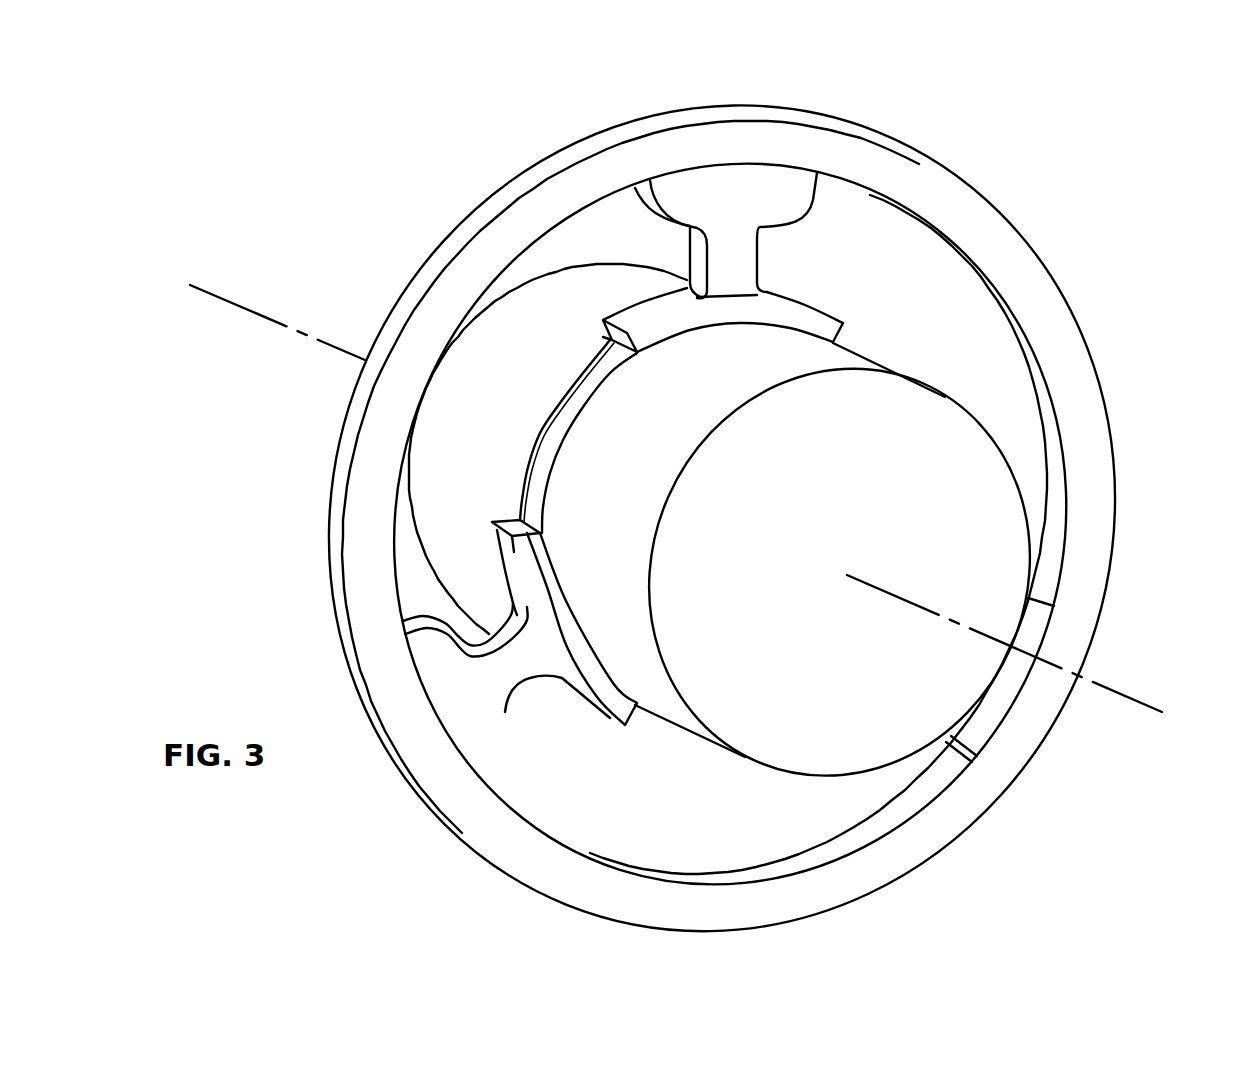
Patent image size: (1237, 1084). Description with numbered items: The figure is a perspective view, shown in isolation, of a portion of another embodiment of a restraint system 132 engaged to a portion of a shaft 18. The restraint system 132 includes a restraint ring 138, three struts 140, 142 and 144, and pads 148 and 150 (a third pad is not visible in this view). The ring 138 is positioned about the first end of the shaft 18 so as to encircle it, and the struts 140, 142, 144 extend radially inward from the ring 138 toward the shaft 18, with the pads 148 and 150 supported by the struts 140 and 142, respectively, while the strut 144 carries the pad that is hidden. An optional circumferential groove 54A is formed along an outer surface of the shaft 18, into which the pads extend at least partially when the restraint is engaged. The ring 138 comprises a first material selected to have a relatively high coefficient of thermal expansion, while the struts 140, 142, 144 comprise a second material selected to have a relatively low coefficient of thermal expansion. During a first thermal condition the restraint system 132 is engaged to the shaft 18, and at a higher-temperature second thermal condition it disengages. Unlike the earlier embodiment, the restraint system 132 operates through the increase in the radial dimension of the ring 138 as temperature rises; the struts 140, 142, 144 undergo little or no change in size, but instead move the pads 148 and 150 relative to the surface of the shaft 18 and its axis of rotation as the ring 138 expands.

The restraint system 132 is at (1120, 215).
The restraint ring 138 is at (1095, 448).
The strut 140 is at (745, 252).
The strut 142 is at (487, 783).
The strut 144 is at (1033, 625).
The pad 148 is at (657, 332).
The pad 150 is at (533, 562).
The shaft 18 is at (952, 457).
The circumferential groove 54A is at (543, 450).